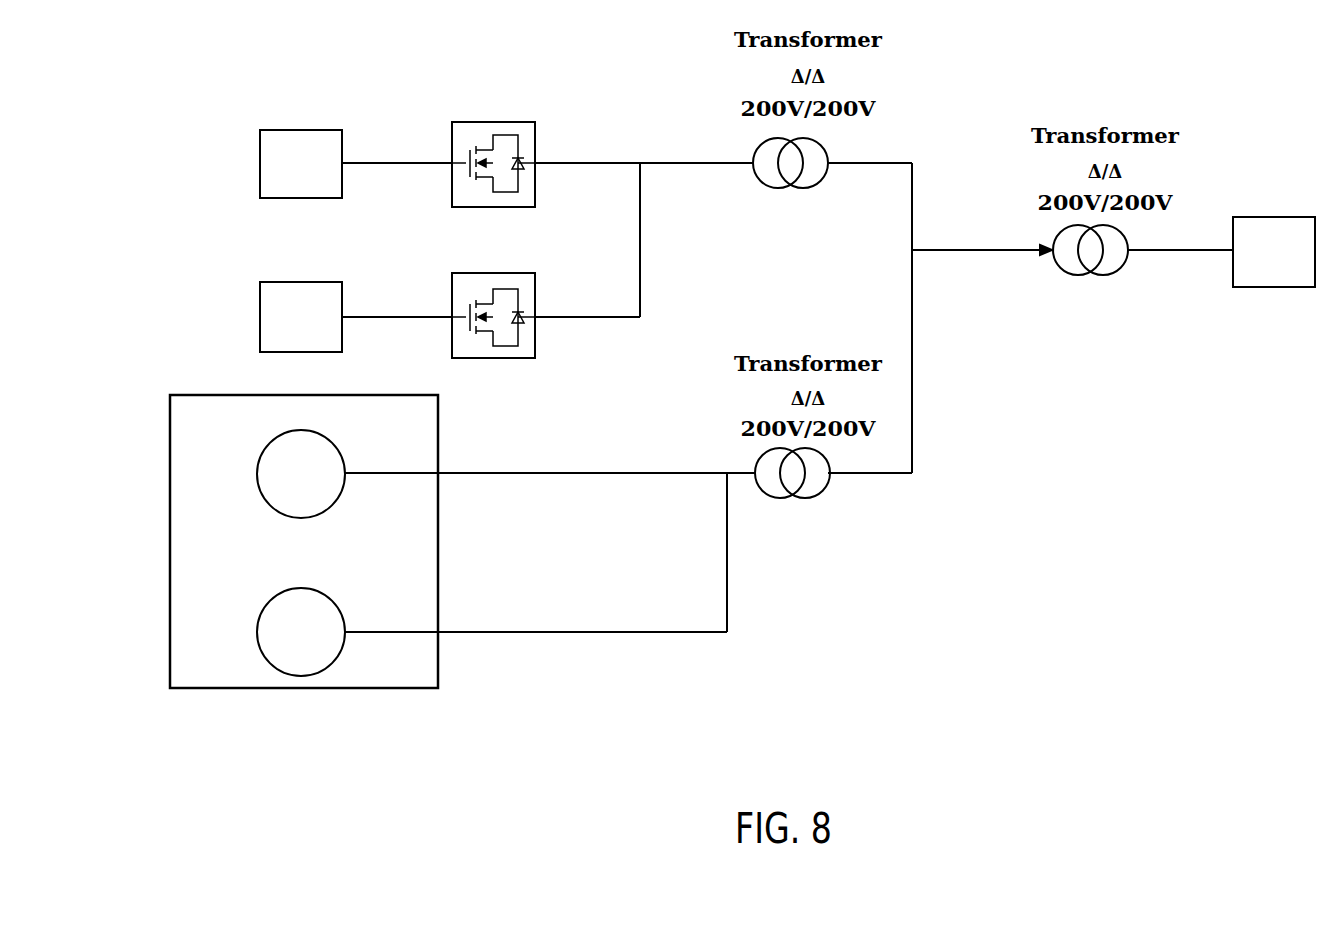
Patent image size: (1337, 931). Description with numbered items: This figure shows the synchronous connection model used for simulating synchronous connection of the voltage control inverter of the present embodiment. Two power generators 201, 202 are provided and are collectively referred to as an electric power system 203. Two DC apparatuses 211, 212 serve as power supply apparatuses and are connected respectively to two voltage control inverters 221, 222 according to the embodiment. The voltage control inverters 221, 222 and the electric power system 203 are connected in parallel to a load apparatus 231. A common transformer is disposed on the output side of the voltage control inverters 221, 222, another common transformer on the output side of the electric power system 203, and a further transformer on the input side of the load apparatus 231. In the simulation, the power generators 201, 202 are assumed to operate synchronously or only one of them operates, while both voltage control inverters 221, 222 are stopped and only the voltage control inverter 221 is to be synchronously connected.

The power generator 201 is at (340, 450).
The power generator 202 is at (332, 597).
The electric power system 203 is at (438, 447).
The DC apparatus 211 is at (265, 130).
The DC apparatus 212 is at (265, 282).
The voltage control inverter 221 is at (522, 122).
The voltage control inverter 222 is at (522, 273).
The load apparatus 231 is at (1253, 217).